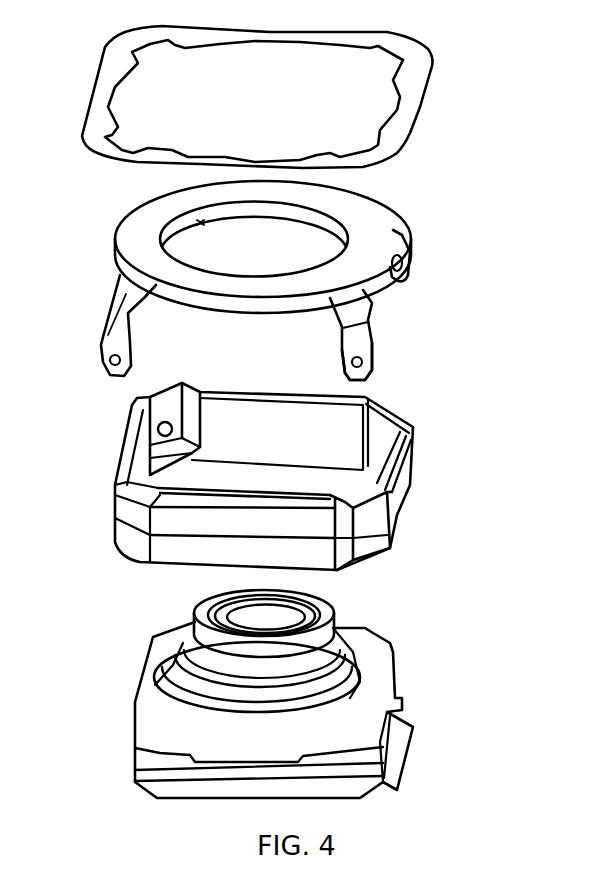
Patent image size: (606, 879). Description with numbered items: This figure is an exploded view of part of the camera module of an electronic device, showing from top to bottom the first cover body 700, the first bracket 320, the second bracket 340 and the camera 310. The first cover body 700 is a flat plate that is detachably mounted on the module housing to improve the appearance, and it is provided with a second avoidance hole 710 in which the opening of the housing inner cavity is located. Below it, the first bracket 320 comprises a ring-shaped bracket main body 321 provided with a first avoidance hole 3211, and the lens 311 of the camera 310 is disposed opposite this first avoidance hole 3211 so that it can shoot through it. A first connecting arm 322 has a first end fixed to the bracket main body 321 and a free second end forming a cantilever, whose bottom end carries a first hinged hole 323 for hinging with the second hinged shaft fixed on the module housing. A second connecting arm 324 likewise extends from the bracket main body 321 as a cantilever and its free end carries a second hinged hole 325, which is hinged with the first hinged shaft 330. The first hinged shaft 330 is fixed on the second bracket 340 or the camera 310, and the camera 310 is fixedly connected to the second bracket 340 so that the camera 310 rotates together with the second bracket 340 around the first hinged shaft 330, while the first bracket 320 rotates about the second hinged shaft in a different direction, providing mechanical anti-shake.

The first cover body 700 is at (418, 70).
The second avoidance hole 710 is at (373, 45).
The first bracket 320 is at (298, 280).
The bracket main body 321 is at (372, 222).
The first avoidance hole 3211 is at (177, 243).
The first connecting arm 322 is at (395, 253).
The first hinged hole 323 is at (402, 261).
The second connecting arm 324 is at (360, 320).
The second hinged hole 325 is at (421, 350).
The first hinged shaft 330 is at (168, 420).
The second bracket 340 is at (393, 453).
The camera 310 is at (377, 652).
The lens 311 is at (203, 630).